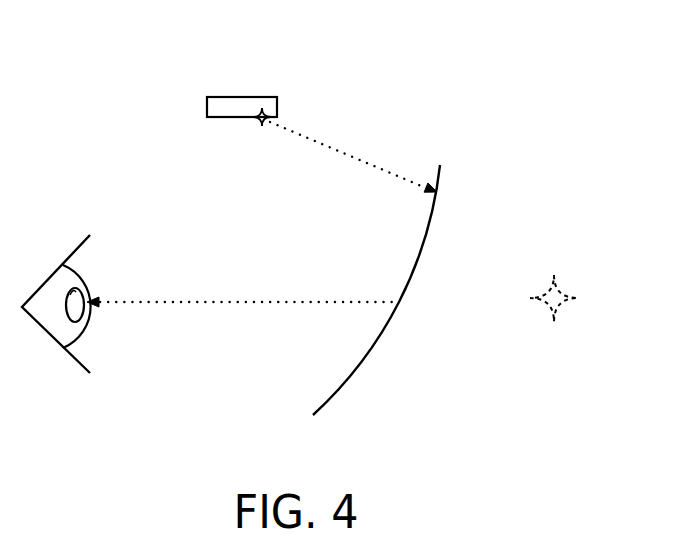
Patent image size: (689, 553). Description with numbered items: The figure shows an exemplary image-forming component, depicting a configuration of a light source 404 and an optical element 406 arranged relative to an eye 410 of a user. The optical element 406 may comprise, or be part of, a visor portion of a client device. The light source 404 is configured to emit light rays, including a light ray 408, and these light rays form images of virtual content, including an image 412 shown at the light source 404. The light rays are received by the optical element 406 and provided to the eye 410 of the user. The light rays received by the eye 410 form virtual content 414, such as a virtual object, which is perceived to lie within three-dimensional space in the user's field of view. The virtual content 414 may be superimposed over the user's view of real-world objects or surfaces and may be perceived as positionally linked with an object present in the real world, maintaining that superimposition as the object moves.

The light source 404 is at (245, 100).
The optical element 406 is at (360, 373).
The light ray 408 is at (338, 148).
The eye 410 is at (80, 283).
The image 412 is at (262, 122).
The virtual content 414 is at (550, 285).